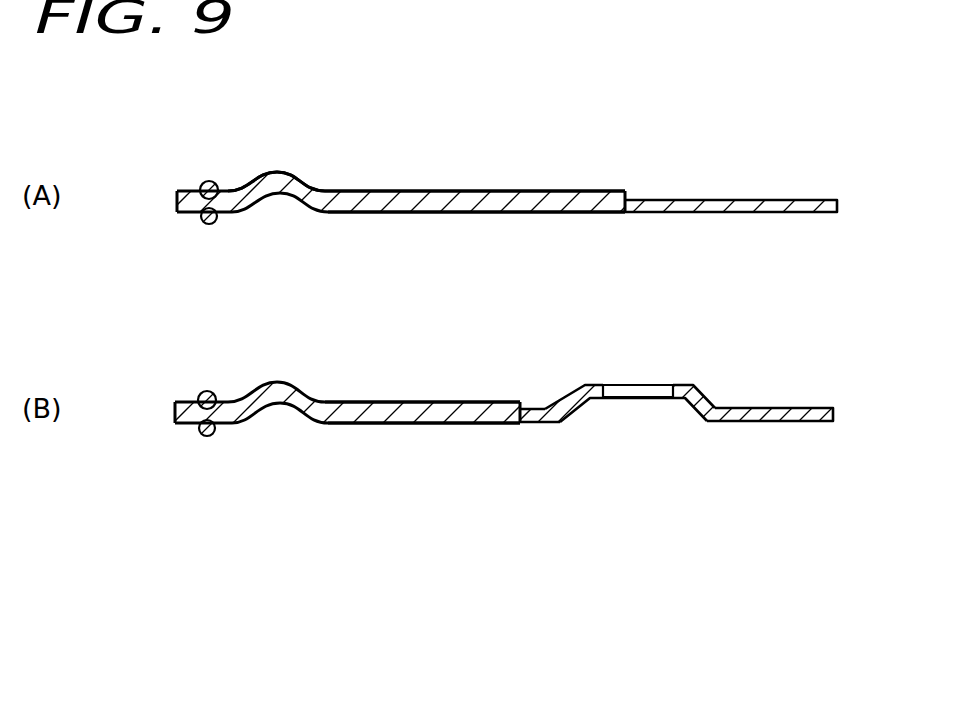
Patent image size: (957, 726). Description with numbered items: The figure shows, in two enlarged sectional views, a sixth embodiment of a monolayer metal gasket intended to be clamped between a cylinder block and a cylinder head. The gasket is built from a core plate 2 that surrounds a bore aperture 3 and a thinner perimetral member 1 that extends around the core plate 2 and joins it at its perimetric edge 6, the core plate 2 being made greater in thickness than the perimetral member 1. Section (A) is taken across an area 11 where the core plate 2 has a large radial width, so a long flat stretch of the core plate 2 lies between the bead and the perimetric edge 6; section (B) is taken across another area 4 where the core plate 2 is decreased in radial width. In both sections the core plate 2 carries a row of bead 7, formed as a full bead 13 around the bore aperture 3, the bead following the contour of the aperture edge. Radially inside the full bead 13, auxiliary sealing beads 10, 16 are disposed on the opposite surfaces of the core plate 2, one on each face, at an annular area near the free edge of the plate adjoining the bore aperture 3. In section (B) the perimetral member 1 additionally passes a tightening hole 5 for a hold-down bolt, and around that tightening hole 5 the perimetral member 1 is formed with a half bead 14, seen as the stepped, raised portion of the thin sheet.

The perimetral member 1 is at (765, 208).
The core plate 2 is at (326, 197).
The bore aperture 3 is at (172, 199).
The other area 4 is at (437, 412).
The tightening hole 5 is at (608, 392).
The perimetric edge 6 is at (628, 198).
The bead 7 is at (278, 172).
The full bead 13 is at (276, 181).
The auxiliary sealing bead 10 is at (210, 181).
The area 11 is at (493, 200).
The half bead 14 is at (570, 395).
The auxiliary sealing bead 16 is at (207, 224).